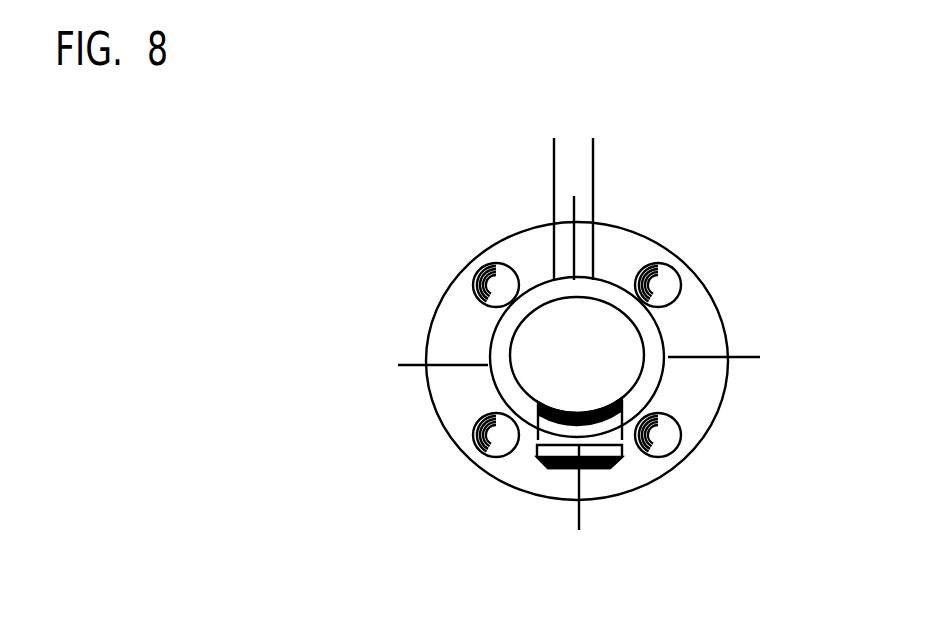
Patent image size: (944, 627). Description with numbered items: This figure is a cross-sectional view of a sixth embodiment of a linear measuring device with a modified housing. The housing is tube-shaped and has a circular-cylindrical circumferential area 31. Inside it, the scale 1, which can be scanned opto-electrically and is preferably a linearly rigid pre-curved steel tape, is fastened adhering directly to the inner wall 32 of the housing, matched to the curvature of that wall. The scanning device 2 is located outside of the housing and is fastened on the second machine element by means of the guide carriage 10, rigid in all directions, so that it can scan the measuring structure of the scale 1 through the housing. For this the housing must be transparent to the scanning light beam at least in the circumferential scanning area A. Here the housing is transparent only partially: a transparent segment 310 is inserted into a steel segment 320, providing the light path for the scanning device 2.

The guide carriage 10 is at (688, 306).
The circular-cylindrical circumferential area 31 is at (490, 333).
The inner wall 32 is at (522, 388).
The steel segment 320 is at (650, 348).
The scale 1 is at (623, 403).
The transparent segment 310 is at (608, 430).
The scanning device 2 is at (571, 452).
The circumferential scanning area A is at (650, 148).